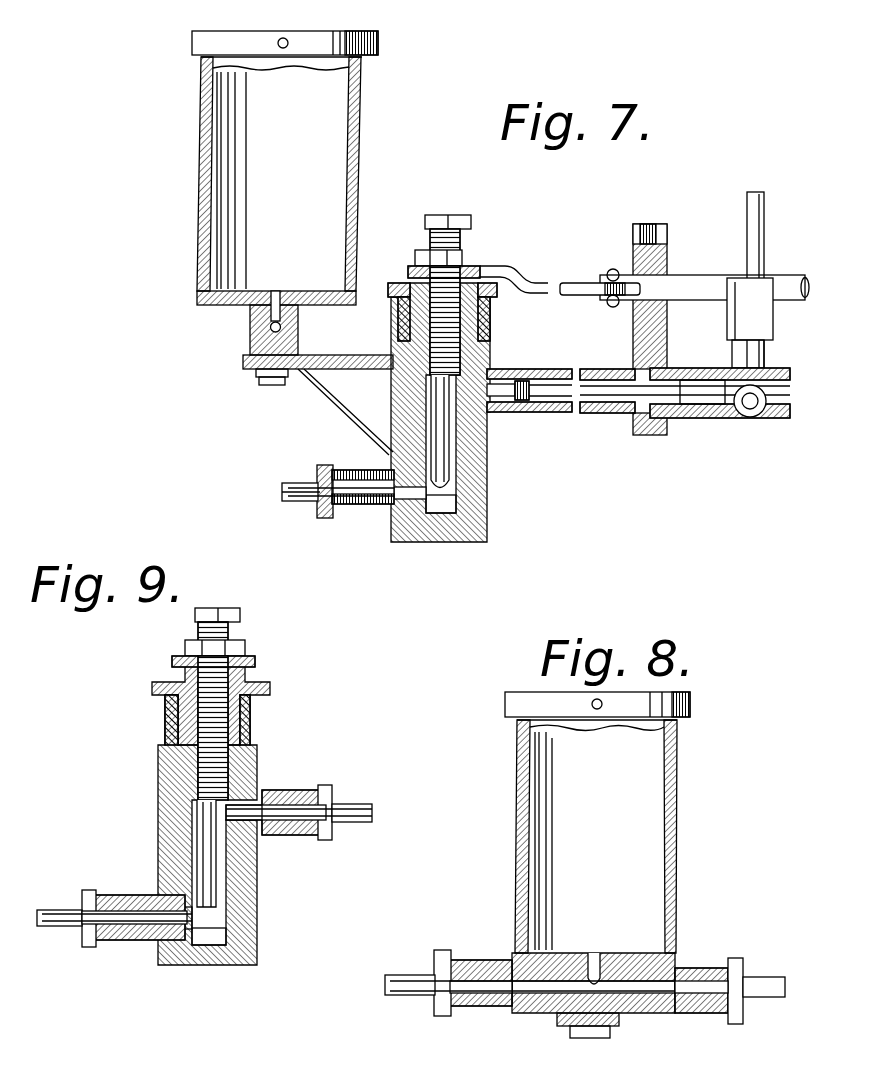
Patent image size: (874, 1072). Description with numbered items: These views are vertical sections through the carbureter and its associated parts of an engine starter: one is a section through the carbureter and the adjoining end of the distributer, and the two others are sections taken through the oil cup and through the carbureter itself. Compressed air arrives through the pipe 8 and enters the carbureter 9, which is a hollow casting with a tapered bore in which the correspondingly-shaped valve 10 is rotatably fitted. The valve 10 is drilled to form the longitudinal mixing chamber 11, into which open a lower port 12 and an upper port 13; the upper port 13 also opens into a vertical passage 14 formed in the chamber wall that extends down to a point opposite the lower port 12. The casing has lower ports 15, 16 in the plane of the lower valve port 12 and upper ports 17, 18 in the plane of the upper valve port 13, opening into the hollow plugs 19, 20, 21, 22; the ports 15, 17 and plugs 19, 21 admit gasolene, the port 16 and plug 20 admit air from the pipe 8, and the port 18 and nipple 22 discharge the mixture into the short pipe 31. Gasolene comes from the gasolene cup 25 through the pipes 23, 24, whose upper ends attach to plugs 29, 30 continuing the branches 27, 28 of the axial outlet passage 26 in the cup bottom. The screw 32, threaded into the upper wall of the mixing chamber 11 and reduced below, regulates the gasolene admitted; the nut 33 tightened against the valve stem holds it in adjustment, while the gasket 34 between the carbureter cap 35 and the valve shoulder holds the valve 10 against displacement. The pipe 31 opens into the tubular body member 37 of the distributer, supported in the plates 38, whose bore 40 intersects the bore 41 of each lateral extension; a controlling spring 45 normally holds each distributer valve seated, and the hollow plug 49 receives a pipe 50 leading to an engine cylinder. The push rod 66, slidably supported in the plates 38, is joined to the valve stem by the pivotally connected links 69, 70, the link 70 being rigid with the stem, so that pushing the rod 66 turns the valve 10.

In FIG. 7, the pipe 8 is at (292, 22).
In FIG. 7, the carbureter 9 is at (447, 211).
In FIG. 9, the carbureter 9 is at (150, 821).
In FIG. 7, the valve 10 is at (468, 462).
In FIG. 9, the valve 10 is at (175, 778).
In FIG. 7, the mixing chamber 11 is at (441, 501).
In FIG. 9, the mixing chamber 11 is at (194, 944).
In FIG. 9, the lower port 12 is at (186, 899).
In FIG. 9, the upper port 13 is at (240, 796).
In FIG. 7, the vertical passage 14 is at (442, 490).
In FIG. 9, the vertical passage 14 is at (214, 942).
In FIG. 9, the lower casing port 15 is at (156, 946).
In FIG. 7, the lower casing port 16 is at (410, 508).
In FIG. 9, the upper casing port 17 is at (258, 845).
In FIG. 7, the upper casing port 18 is at (495, 400).
In FIG. 9, the plug 19 is at (108, 946).
In FIG. 7, the plug 20 is at (365, 471).
In FIG. 9, the plug 21 is at (305, 845).
In FIG. 7, the outlet plug 22 is at (497, 368).
In FIG. 7, the pipe 23 is at (330, 398).
In FIG. 9, the pipe 23 is at (52, 914).
In FIG. 8, the pipe 23 is at (394, 992).
In FIG. 9, the pipe 24 is at (338, 813).
In FIG. 8, the pipe 24 is at (747, 981).
In FIG. 7, the gasolene cup 25 is at (204, 195).
In FIG. 8, the gasolene cup 25 is at (519, 851).
In FIG. 7, the axial outlet passage 26 is at (278, 295).
In FIG. 8, the axial outlet passage 26 is at (596, 955).
In FIG. 7, the branch 27 is at (266, 330).
In FIG. 8, the branch 27 is at (535, 1013).
In FIG. 8, the branch 28 is at (624, 1014).
In FIG. 8, the plug 29 is at (500, 960).
In FIG. 8, the plug 30 is at (679, 966).
In FIG. 7, the short pipe 31 is at (566, 413).
In FIG. 7, the screw 32 is at (462, 222).
In FIG. 9, the screw 32 is at (225, 610).
In FIG. 7, the nut 33 is at (462, 256).
In FIG. 9, the nut 33 is at (245, 648).
In FIG. 7, the gasket 34 is at (491, 306).
In FIG. 9, the gasket 34 is at (252, 713).
In FIG. 9, the carbureter cap 35 is at (262, 688).
In FIG. 7, the tubular body member 37 is at (720, 418).
In FIG. 7, the plates 38 is at (667, 241).
In FIG. 7, the bore 40 is at (682, 420).
In FIG. 7, the bore 41 is at (757, 417).
In FIG. 7, the controlling spring 45 is at (736, 396).
In FIG. 7, the hollow plug 49 is at (762, 357).
In FIG. 7, the pipe 50 is at (764, 217).
In FIG. 7, the push rod 66 is at (684, 282).
In FIG. 7, the link 69 is at (590, 296).
In FIG. 7, the link 70 is at (480, 272).
In FIG. 9, the link 70 is at (182, 660).